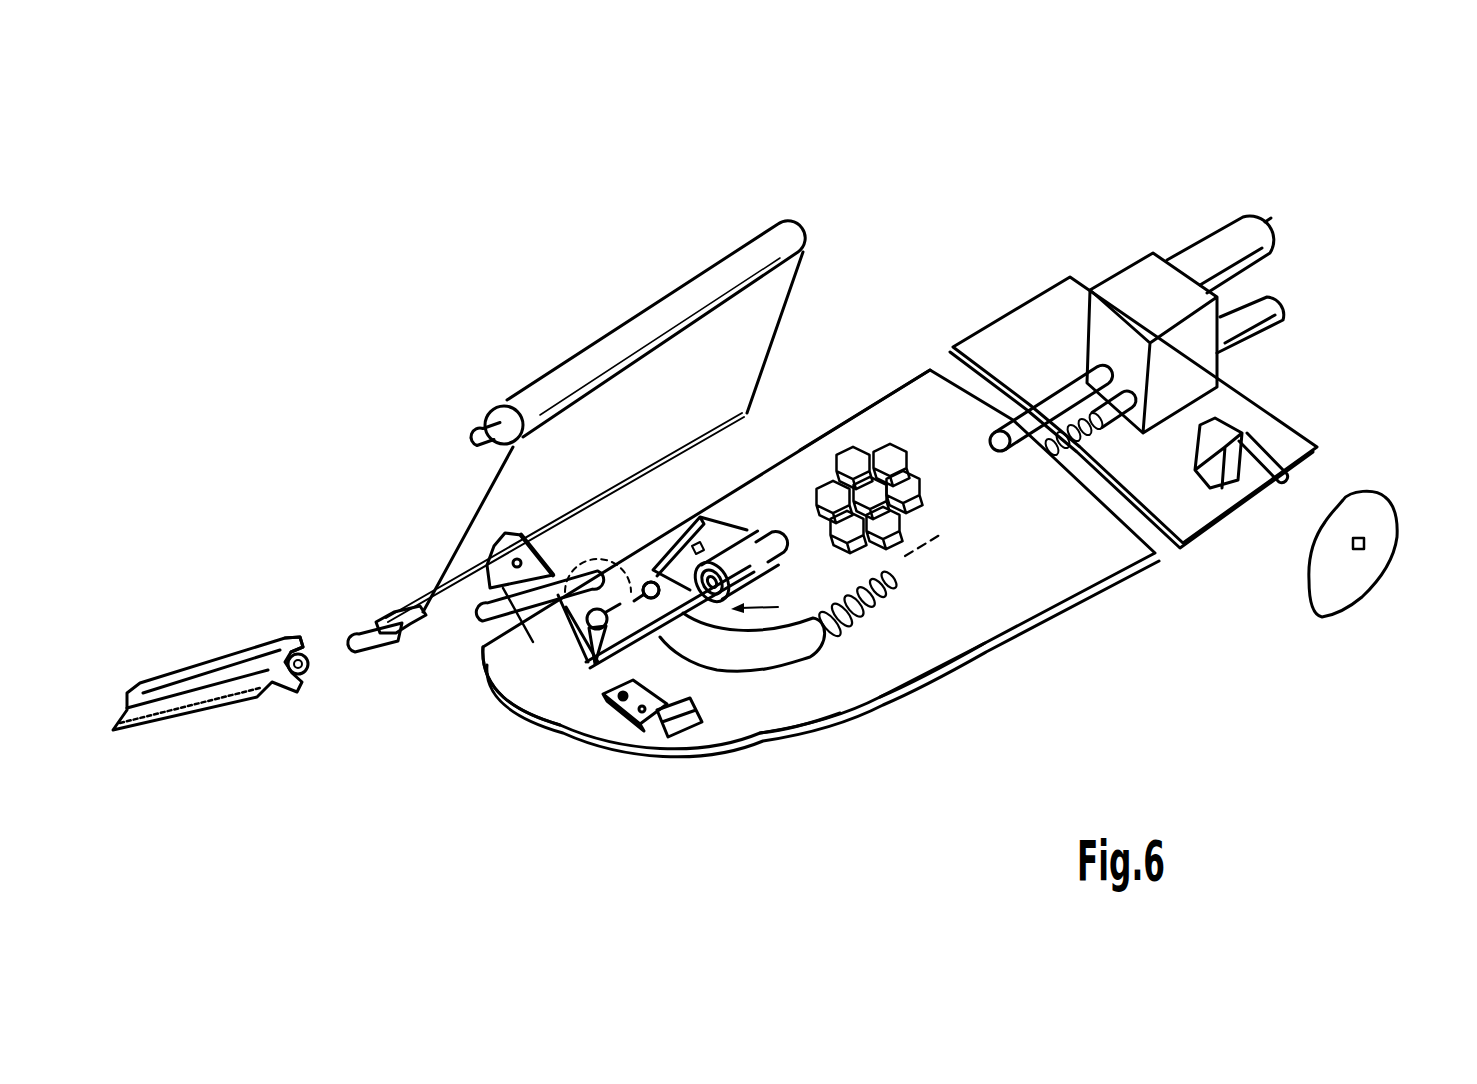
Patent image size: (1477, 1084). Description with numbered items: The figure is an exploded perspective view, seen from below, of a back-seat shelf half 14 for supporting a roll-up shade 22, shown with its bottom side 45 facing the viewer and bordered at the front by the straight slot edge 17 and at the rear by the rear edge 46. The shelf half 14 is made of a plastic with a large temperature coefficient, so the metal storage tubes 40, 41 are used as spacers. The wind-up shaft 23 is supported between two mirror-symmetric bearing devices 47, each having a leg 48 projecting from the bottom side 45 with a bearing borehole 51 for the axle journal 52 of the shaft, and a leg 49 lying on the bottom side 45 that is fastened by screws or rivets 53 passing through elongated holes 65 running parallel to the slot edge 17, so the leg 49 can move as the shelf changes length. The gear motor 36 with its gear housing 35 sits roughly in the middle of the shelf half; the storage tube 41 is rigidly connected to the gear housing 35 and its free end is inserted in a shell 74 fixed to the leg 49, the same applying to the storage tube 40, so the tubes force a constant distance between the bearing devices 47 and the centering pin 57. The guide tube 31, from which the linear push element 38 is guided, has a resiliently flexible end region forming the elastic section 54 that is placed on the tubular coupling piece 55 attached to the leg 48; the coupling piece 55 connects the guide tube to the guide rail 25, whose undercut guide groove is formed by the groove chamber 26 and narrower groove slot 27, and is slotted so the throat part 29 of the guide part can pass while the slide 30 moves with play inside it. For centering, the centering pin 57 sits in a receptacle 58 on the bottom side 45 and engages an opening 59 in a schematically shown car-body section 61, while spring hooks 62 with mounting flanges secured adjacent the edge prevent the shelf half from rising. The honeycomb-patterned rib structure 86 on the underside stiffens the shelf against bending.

The back-seat shelf half 14 is at (920, 747).
The slot edge 17 is at (860, 403).
The roll-up shade 22 is at (727, 377).
The wind-up shaft 23 is at (503, 408).
The guide rail 25 is at (178, 648).
The groove chamber 26 is at (308, 676).
The groove slot 27 is at (304, 648).
The throat part 29 is at (387, 613).
The slide 30 is at (363, 655).
The guide tube 31 is at (1143, 433).
The gear housing 35 is at (1133, 273).
The gear motor 36 is at (1255, 275).
The linear push element 38 is at (897, 562).
The storage tube 40 is at (1267, 333).
The storage tube 41 is at (1048, 412).
The bottom side 45 is at (993, 607).
The rear edge 46 is at (817, 729).
The bearing device 47 is at (767, 602).
The leg 48 is at (497, 675).
The leg 49 is at (653, 560).
The bearing borehole 51 is at (518, 556).
The axle journal 52 is at (476, 440).
The screws or rivets 53 is at (651, 581).
The elastic section 54 is at (773, 650).
The coupling piece 55 is at (483, 612).
The centering pin 57 is at (1287, 483).
The receptacle 58 is at (1250, 437).
The opening 59 is at (1367, 547).
The section 61 is at (1333, 603).
The spring hooks 62 is at (657, 708).
The elongated holes 65 is at (607, 573).
The shell 74 is at (740, 547).
The honeycomb insert 86 is at (868, 448).